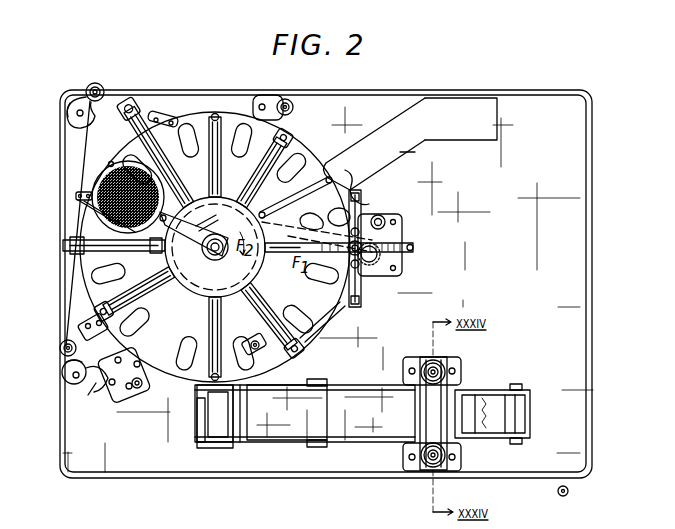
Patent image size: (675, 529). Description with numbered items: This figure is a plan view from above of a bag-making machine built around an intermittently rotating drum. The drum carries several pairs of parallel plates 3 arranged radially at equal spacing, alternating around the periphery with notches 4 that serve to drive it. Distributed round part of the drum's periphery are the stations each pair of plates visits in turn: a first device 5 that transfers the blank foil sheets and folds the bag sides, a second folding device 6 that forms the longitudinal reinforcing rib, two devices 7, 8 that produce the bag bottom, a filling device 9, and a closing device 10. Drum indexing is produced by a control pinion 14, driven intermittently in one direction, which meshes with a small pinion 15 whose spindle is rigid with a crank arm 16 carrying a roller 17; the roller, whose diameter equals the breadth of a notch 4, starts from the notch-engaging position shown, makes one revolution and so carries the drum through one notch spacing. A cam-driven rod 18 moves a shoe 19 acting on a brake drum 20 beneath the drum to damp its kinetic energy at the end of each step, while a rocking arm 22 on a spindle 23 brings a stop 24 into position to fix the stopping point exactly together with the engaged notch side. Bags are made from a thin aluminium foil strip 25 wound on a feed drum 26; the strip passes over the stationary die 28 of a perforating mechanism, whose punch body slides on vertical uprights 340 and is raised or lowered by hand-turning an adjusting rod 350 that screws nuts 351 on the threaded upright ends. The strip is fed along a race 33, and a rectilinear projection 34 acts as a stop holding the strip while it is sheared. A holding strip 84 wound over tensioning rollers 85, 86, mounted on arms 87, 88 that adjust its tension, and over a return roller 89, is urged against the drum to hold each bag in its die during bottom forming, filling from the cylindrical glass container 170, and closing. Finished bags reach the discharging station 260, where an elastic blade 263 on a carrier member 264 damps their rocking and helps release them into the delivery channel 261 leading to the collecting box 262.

The parallel plates 3 is at (283, 140).
The notches 4 is at (299, 169).
The first device 5 is at (197, 426).
The second folding device 6 is at (129, 402).
The bottom-producing device 7 is at (90, 329).
The bottom-producing device 8 is at (63, 248).
The filling device 9 is at (76, 195).
The closing device 10 is at (143, 104).
The control pinion 14 is at (404, 235).
The small pinion 15 is at (390, 275).
The crank arm 16 is at (381, 212).
The roller 17 is at (395, 208).
The rod 18 is at (300, 226).
The shoe 19 is at (240, 196).
The brake drum 20 is at (200, 272).
The rocking arm 22 is at (330, 316).
The spindle 23 is at (361, 284).
The stop 24 is at (292, 337).
The aluminium foil strip 25 is at (484, 446).
The feed drum 26 is at (515, 384).
The stationary die 28 is at (417, 410).
The race 33 is at (353, 440).
The rectilinear projection 34 is at (238, 446).
The holding strip 84 is at (87, 392).
The tensioning roller 85 is at (59, 349).
The tensioning roller 86 is at (88, 87).
The arm 87 is at (62, 374).
The arm 88 is at (96, 114).
The return roller 89 is at (294, 107).
The cylindrical glass container 170 is at (94, 180).
The discharging station 260 is at (368, 150).
The delivery channel 261 is at (414, 156).
The collecting box 262 is at (497, 116).
The elastic blade 263 is at (306, 193).
The carrier member 264 is at (357, 186).
The vertical uprights 340 is at (442, 360).
The adjusting rod 350 is at (445, 468).
The nuts 351 is at (428, 362).